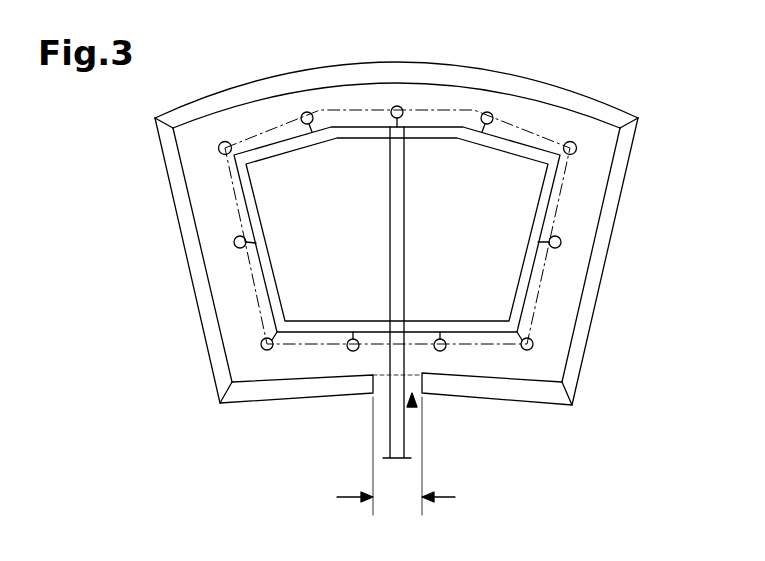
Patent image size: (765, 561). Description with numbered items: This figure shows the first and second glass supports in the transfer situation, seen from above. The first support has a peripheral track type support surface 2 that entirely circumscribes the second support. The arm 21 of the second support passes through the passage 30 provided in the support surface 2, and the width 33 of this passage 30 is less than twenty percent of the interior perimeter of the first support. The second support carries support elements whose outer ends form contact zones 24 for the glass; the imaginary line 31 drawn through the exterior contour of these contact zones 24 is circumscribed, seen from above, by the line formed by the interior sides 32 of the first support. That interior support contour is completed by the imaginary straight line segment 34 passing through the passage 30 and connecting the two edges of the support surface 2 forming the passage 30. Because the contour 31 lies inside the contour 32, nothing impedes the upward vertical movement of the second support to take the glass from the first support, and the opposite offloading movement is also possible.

The peripheral track type support surface 2 is at (405, 234).
The arm 21 is at (398, 360).
The contact zone 24 is at (487, 112).
The passage 30 is at (412, 407).
The imaginary line 31 is at (548, 305).
The interior sides 32 is at (353, 84).
The width of the passage 33 is at (396, 456).
The imaginary straight line segment 34 is at (375, 373).